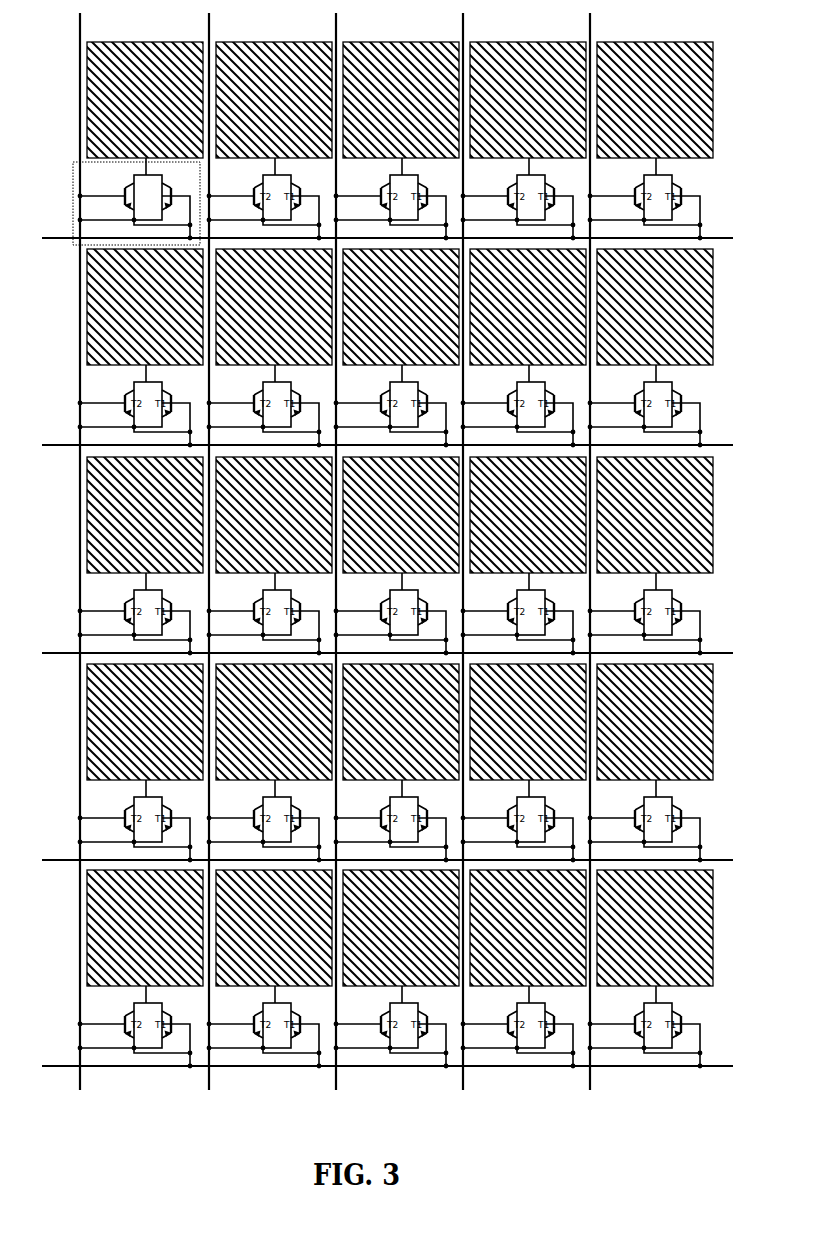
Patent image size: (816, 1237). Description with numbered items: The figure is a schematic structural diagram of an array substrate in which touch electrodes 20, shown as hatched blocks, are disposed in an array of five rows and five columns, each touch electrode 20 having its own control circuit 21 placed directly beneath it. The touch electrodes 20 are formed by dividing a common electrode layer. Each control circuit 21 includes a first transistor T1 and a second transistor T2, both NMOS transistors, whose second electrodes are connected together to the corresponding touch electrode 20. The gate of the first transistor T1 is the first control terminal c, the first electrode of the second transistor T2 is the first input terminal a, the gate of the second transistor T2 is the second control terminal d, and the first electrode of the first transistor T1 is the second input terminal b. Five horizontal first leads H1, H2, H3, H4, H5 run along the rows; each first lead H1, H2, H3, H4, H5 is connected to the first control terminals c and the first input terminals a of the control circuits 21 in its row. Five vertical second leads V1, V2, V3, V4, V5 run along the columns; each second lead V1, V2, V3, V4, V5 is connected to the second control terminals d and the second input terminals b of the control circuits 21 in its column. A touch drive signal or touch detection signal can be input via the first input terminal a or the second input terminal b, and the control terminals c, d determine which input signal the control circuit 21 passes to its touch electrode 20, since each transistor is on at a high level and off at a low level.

The touch electrode 20 is at (88, 105).
The control circuit 21 is at (114, 192).
The first transistor T1 is at (162, 196).
The second transistor T2 is at (133, 196).
The first input terminal a is at (163, 214).
The second input terminal b is at (107, 211).
The first control terminal c is at (177, 207).
The second control terminal d is at (101, 186).
The second lead V1 is at (65, 551).
The second lead V2 is at (194, 551).
The second lead V3 is at (321, 551).
The second lead V4 is at (448, 551).
The second lead V5 is at (575, 551).
The first lead H1 is at (387, 226).
The first lead H2 is at (385, 433).
The first lead H3 is at (385, 641).
The first lead H4 is at (385, 848).
The first lead H5 is at (385, 1054).